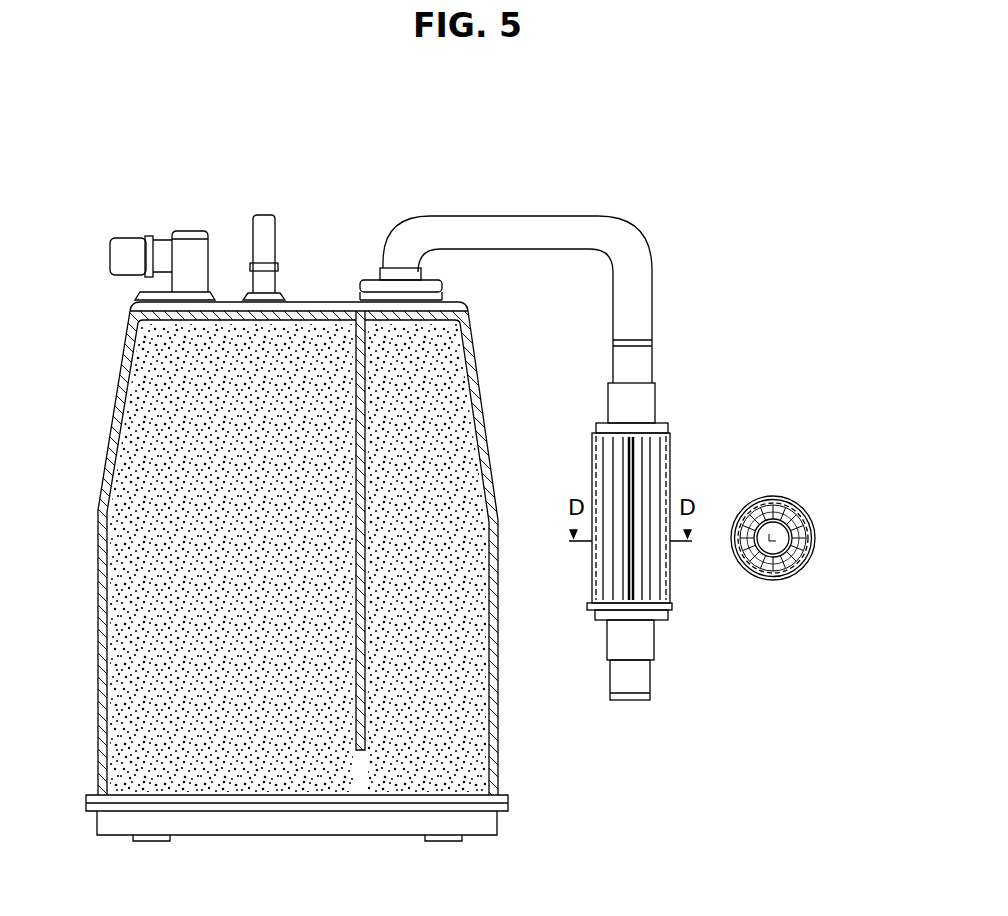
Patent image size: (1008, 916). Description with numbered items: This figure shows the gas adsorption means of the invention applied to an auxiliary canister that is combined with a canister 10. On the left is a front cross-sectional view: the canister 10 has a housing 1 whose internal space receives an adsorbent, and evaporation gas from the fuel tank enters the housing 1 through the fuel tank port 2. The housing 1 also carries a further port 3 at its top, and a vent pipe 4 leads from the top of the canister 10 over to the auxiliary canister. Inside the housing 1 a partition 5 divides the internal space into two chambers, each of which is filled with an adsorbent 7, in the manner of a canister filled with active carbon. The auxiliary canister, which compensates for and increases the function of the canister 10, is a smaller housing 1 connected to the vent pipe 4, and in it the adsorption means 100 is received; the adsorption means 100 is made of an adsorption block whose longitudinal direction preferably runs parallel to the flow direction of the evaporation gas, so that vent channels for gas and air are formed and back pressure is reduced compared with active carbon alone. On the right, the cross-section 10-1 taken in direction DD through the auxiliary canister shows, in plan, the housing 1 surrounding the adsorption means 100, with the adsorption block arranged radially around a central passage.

The canister 10 is at (91, 158).
The housing 1 is at (113, 418).
The fuel tank port 2 is at (128, 239).
The purge port 3 is at (265, 221).
The atmospheric vent pipe 4 is at (443, 221).
The partition 5 is at (440, 404).
The adsorbent 7 is at (150, 462).
The adsorption means 100 is at (652, 473).
The cross-section 10-1 is at (798, 482).